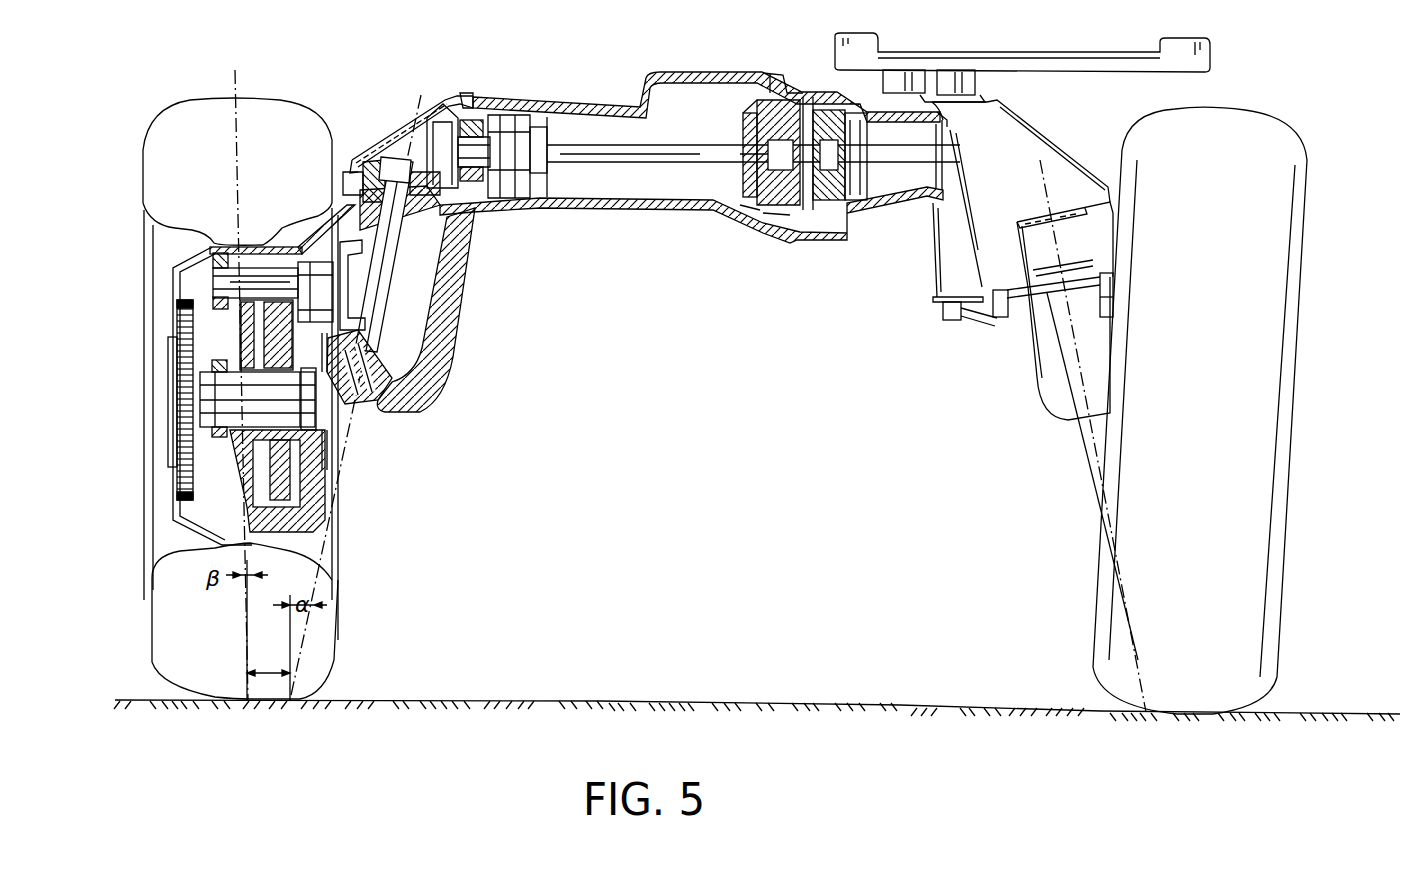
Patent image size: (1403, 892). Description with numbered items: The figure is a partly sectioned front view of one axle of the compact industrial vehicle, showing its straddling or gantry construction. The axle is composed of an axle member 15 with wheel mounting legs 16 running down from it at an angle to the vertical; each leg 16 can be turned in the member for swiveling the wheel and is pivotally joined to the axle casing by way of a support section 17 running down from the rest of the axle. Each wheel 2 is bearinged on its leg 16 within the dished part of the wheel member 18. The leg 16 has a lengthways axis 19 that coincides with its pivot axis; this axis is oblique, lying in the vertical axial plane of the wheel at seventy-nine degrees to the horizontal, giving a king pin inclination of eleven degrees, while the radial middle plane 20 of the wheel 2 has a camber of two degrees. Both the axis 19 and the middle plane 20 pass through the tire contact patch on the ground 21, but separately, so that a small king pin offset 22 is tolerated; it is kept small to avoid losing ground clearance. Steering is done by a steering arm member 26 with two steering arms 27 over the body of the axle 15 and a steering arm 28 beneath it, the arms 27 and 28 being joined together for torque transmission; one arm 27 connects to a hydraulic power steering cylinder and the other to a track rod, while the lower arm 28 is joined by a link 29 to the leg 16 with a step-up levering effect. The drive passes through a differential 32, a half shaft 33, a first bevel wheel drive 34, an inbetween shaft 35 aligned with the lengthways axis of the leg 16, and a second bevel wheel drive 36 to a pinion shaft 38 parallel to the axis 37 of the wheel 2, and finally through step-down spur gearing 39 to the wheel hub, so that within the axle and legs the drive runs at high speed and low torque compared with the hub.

The wheel 2 is at (177, 123).
The axle member 15 is at (573, 103).
The wheel mounting leg 16 is at (420, 310).
The support section 17 is at (425, 366).
The wheel member 18 is at (260, 548).
The lengthways axis 19 is at (349, 433).
The radial middle plane 20 is at (237, 120).
The ground 21 is at (388, 699).
The king pin offset 22 is at (268, 630).
The steering arm member 26 is at (976, 78).
The steering arm 27 is at (1088, 58).
The steering arm 28 is at (962, 320).
The link 29 is at (1047, 297).
The differential 32 is at (802, 100).
The half shaft 33 is at (650, 160).
The first bevel wheel drive 34 is at (413, 160).
The inbetween shaft 35 is at (453, 207).
The second bevel wheel drive 36 is at (432, 277).
The wheel axis 37 is at (210, 399).
The pinion shaft 38 is at (213, 283).
The spur gearing 39 is at (200, 325).